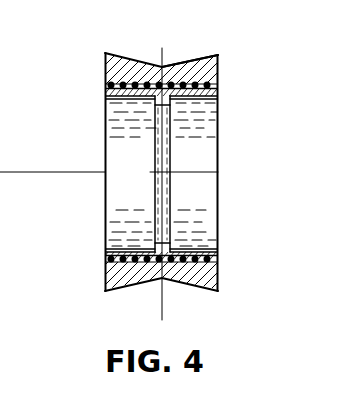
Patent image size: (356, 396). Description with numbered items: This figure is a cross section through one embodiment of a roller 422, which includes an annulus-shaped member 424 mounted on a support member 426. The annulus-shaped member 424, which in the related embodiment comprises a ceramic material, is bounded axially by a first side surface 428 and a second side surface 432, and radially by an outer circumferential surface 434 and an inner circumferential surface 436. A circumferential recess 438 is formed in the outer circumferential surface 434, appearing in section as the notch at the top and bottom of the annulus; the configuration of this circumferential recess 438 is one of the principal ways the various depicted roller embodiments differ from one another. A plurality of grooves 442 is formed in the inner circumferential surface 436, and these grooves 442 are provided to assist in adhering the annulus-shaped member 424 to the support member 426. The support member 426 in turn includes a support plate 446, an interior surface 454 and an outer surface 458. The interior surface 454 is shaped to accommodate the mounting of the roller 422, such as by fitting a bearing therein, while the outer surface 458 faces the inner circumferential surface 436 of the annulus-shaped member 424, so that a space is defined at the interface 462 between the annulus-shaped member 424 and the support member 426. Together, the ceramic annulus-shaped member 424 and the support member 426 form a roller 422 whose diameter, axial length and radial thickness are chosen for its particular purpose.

The roller 422 is at (100, 44).
The annulus-shaped member 424 is at (195, 73).
The support member 426 is at (219, 99).
The first side surface 428 is at (104, 76).
The second side surface 432 is at (218, 78).
The outer circumferential surface 434 is at (205, 55).
The inner circumferential surface 436 is at (207, 97).
The circumferential recess 438 is at (176, 62).
The grooves 442 is at (171, 104).
The support plate 446 is at (104, 89).
The interior surface 454 is at (201, 234).
The outer surface 458 is at (216, 286).
The lower balls 462 is at (104, 261).